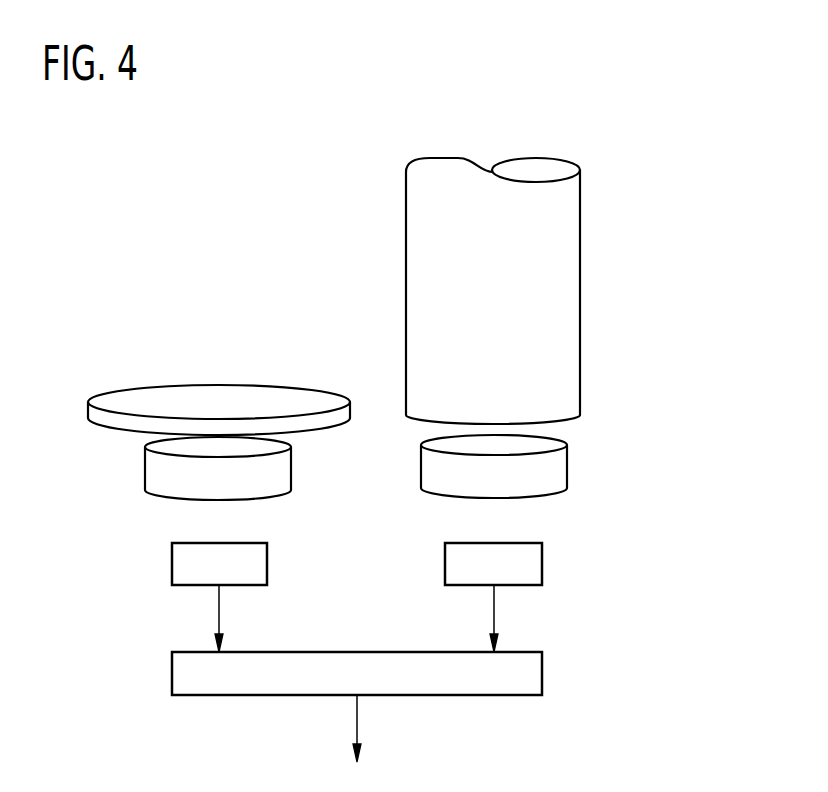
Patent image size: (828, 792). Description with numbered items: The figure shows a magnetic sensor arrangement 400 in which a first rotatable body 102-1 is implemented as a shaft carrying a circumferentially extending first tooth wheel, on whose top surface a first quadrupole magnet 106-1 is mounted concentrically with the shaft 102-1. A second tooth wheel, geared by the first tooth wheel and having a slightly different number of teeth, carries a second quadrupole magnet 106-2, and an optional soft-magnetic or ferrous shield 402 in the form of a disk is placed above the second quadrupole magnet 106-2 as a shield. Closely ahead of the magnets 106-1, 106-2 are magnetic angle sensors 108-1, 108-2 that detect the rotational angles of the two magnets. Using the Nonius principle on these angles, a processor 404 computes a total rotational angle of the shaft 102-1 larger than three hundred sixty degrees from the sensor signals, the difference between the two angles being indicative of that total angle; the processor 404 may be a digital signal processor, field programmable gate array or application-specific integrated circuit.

The magnetic sensor arrangement 400 is at (636, 150).
The shield 402 is at (215, 397).
The first rotatable body 102-1 is at (567, 285).
The first quadrupole magnet 106-1 is at (552, 470).
The second quadrupole magnet 106-2 is at (162, 473).
The magnetic angle sensor 108-1 is at (493, 597).
The magnetic angle sensor 108-2 is at (219, 597).
The processor 404 is at (357, 708).